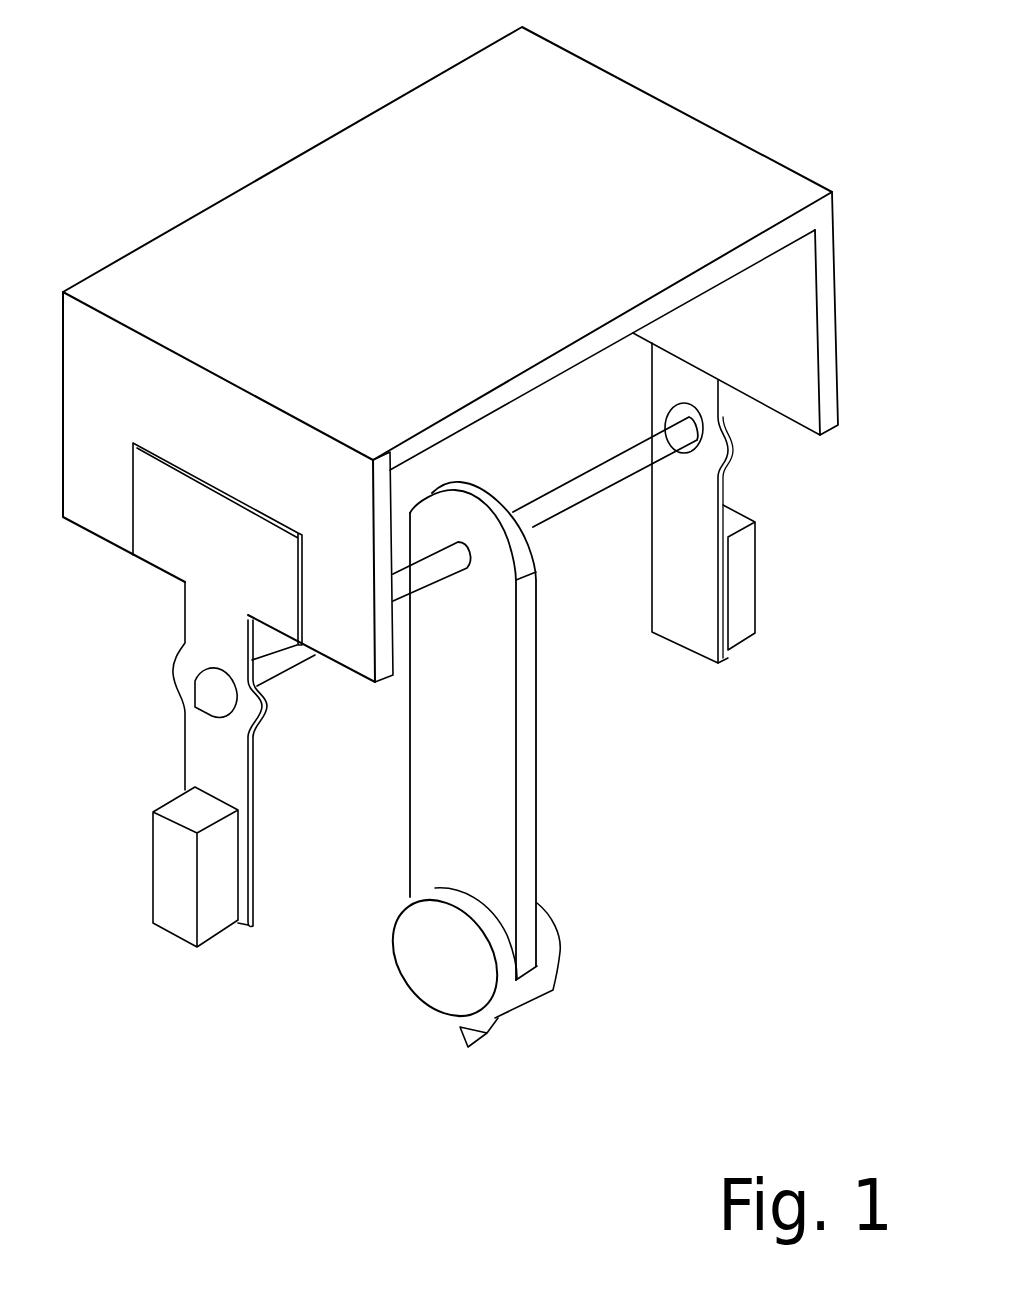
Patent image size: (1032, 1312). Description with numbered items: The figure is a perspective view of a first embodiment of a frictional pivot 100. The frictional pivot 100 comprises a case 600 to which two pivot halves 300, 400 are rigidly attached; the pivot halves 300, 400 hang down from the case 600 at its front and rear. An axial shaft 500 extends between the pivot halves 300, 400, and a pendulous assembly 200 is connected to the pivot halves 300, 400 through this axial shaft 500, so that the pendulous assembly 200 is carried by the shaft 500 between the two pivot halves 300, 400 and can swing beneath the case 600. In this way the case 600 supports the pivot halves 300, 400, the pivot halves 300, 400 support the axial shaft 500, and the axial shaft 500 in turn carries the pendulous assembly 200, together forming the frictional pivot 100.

The frictional pivot 100 is at (195, 78).
The pendulous assembly 200 is at (555, 836).
The pivot half 300 is at (178, 753).
The pivot half 400 is at (742, 460).
The axial shaft 500 is at (565, 520).
The case 600 is at (670, 97).